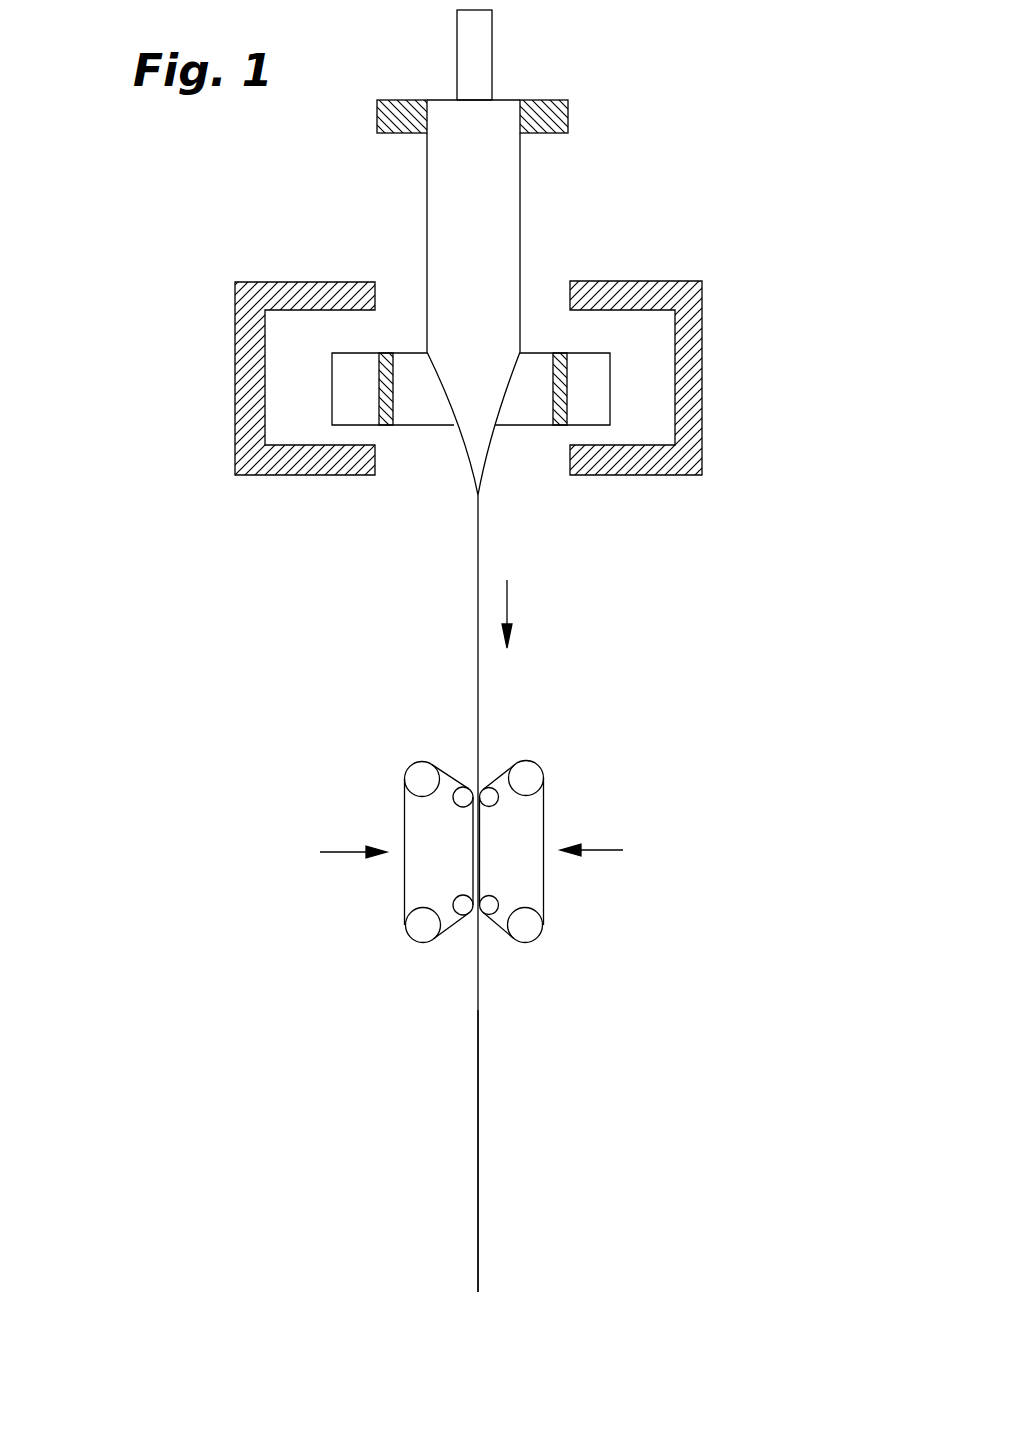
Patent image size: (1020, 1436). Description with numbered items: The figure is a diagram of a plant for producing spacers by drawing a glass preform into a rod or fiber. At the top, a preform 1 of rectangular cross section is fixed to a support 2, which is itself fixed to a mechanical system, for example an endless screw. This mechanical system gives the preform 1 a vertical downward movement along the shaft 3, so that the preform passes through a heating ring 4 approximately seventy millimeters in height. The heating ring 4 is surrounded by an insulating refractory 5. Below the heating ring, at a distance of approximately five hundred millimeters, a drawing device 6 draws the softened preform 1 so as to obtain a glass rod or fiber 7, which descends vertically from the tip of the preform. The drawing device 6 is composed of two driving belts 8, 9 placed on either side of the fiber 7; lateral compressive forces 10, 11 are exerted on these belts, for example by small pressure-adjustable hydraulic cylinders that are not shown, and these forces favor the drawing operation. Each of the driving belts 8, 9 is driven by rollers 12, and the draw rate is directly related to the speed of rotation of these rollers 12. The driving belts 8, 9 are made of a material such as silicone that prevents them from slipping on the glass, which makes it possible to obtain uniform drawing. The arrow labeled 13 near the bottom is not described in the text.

The preform 1 is at (512, 200).
The support 2 is at (568, 116).
The shaft 3 is at (489, 45).
The heating ring 4 is at (590, 412).
The insulating refractory 5 is at (688, 371).
The drawing device 6 is at (527, 740).
The glass rod or fiber 7 is at (477, 590).
The driving belt 8 is at (543, 888).
The driving belt 9 is at (405, 885).
The lateral compressive force 10 is at (338, 845).
The lateral compressive force 11 is at (605, 842).
The rollers 12 is at (420, 772).
The fiber take-off direction 13 is at (233, 1007).